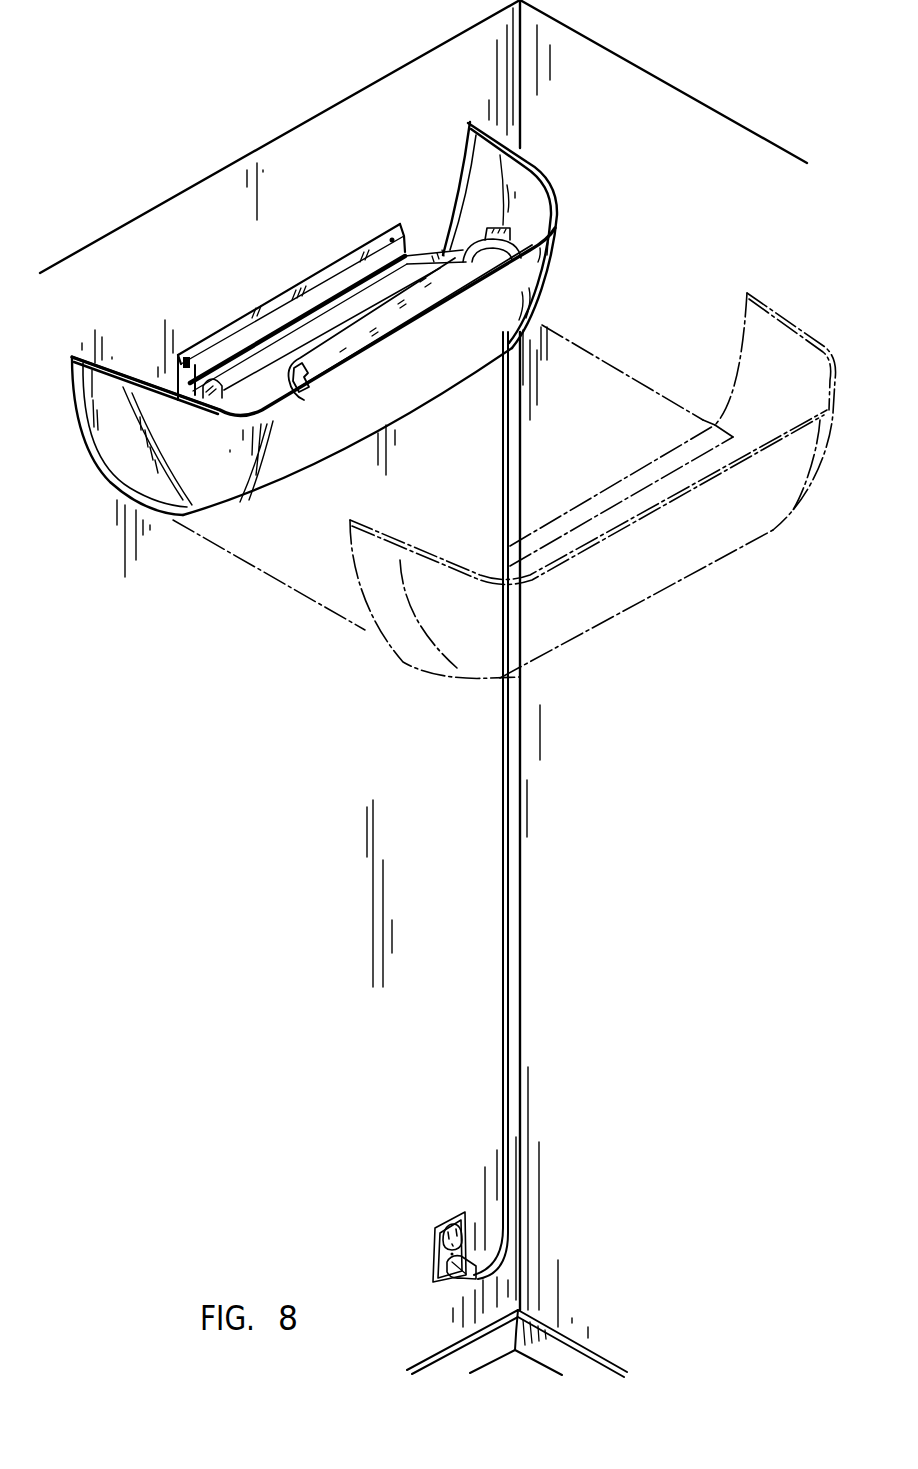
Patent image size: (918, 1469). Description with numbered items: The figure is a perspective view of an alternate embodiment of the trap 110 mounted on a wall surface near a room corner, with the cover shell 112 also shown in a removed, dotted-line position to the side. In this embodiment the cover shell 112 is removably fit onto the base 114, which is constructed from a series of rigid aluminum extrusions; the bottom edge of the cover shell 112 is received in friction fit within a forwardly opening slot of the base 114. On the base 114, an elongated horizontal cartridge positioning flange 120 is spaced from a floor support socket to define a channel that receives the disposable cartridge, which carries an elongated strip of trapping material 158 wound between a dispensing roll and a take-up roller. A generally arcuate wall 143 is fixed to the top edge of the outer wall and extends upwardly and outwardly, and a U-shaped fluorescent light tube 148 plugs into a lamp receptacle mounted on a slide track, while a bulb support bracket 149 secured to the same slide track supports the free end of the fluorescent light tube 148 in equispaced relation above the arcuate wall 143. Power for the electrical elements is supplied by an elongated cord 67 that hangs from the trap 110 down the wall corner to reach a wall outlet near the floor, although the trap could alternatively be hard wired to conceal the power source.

The trap 110 is at (138, 540).
The cover shell 112 is at (202, 483).
The base 114 is at (275, 293).
The cartridge positioning flange 120 is at (135, 268).
The arcuate wall 143 is at (269, 522).
The fluorescent light tube 148 is at (497, 270).
The bulb support bracket 149 is at (308, 390).
The trapping material 158 is at (288, 160).
The cord 67 is at (503, 887).